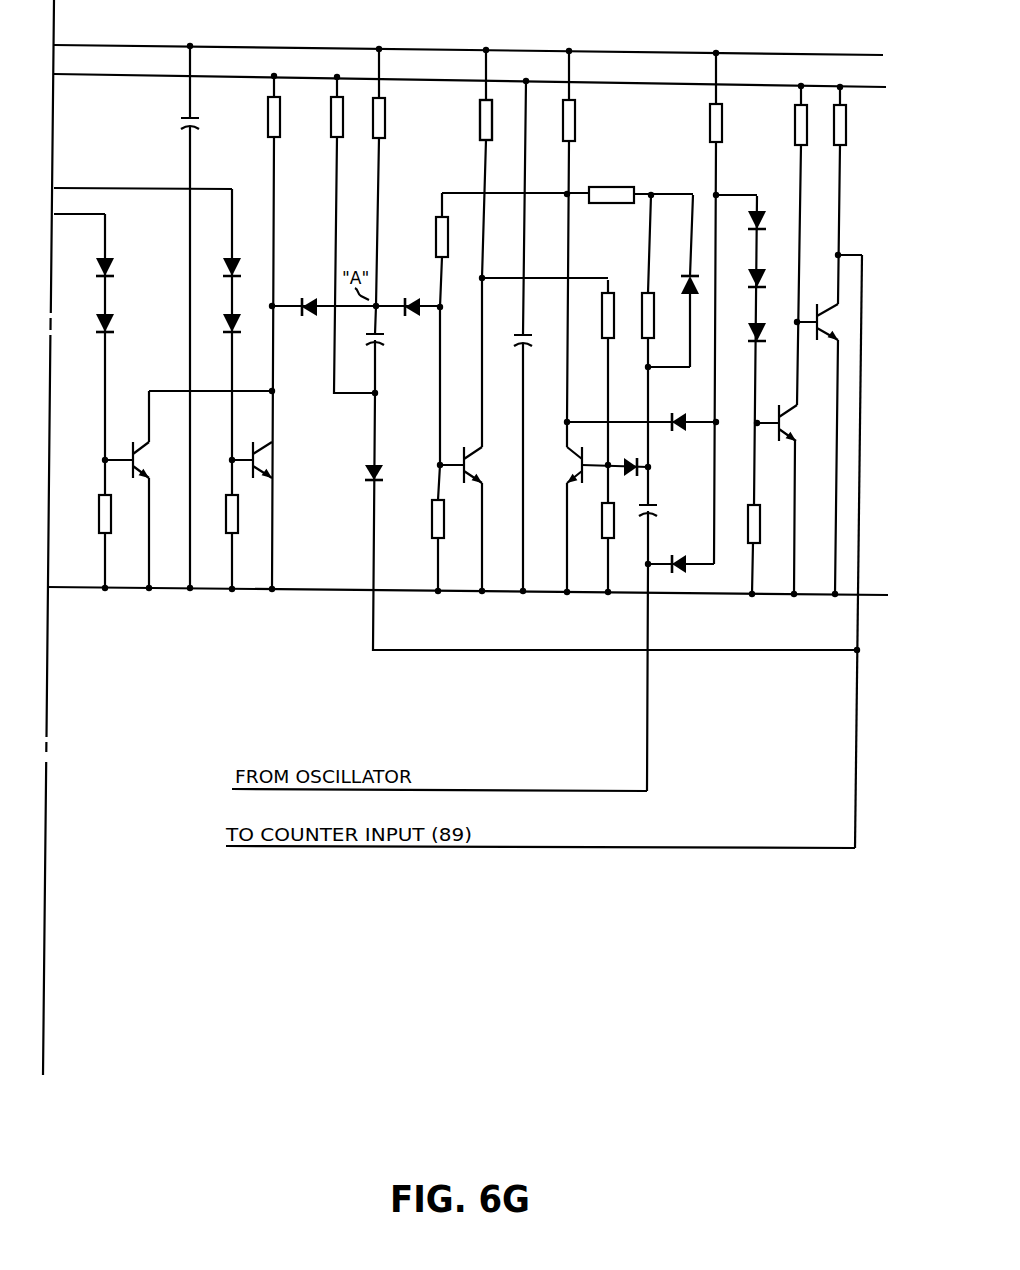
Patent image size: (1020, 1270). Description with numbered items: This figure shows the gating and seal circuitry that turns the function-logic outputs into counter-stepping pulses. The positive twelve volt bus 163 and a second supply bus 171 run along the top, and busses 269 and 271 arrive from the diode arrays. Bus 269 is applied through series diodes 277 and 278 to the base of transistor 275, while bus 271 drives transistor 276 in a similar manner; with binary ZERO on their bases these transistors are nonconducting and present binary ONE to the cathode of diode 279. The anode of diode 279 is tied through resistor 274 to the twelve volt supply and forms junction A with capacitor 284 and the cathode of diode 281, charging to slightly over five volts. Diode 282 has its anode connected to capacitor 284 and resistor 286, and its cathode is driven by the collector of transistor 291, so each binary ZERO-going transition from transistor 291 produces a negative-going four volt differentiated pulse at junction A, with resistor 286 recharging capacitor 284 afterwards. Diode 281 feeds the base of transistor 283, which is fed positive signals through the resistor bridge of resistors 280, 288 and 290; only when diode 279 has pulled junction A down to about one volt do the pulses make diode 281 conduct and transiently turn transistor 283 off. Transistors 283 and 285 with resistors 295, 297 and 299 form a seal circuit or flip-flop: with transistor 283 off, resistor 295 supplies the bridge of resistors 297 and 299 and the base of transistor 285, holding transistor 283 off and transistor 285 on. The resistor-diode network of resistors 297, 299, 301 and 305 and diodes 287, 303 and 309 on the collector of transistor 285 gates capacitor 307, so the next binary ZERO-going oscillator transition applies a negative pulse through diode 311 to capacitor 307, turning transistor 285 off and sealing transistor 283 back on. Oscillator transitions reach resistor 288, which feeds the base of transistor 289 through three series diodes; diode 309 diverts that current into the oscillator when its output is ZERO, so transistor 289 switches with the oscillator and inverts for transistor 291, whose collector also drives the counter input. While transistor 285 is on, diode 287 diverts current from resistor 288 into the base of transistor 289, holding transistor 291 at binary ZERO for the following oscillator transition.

The positive 12 volt bus 163 is at (76, 45).
The supply line 171 is at (75, 74).
The bus 271 is at (88, 188).
The bus 269 is at (107, 229).
The diode 277 is at (114, 267).
The diode 278 is at (114, 323).
The resistor 286 is at (332, 122).
The resistor 274 is at (384, 119).
The resistor 295 is at (478, 128).
The resistor 280 is at (572, 119).
The resistor 288 is at (720, 118).
The resistor 305 is at (600, 186).
The diode 303 is at (689, 270).
The diode 279 is at (304, 298).
The diode 281 is at (410, 298).
The capacitor 284 is at (385, 338).
The diode 282 is at (378, 468).
The resistor 290 is at (434, 513).
The resistor 297 is at (602, 329).
The resistor 301 is at (655, 335).
The diode 287 is at (675, 418).
The diode 311 is at (641, 445).
The capacitor 307 is at (658, 511).
The diode 309 is at (673, 559).
The resistor 299 is at (595, 525).
The transistor 275 is at (138, 455).
The transistor 276 is at (267, 458).
The transistor 283 is at (474, 466).
The transistor 285 is at (579, 473).
The transistor 289 is at (781, 417).
The transistor 291 is at (832, 324).